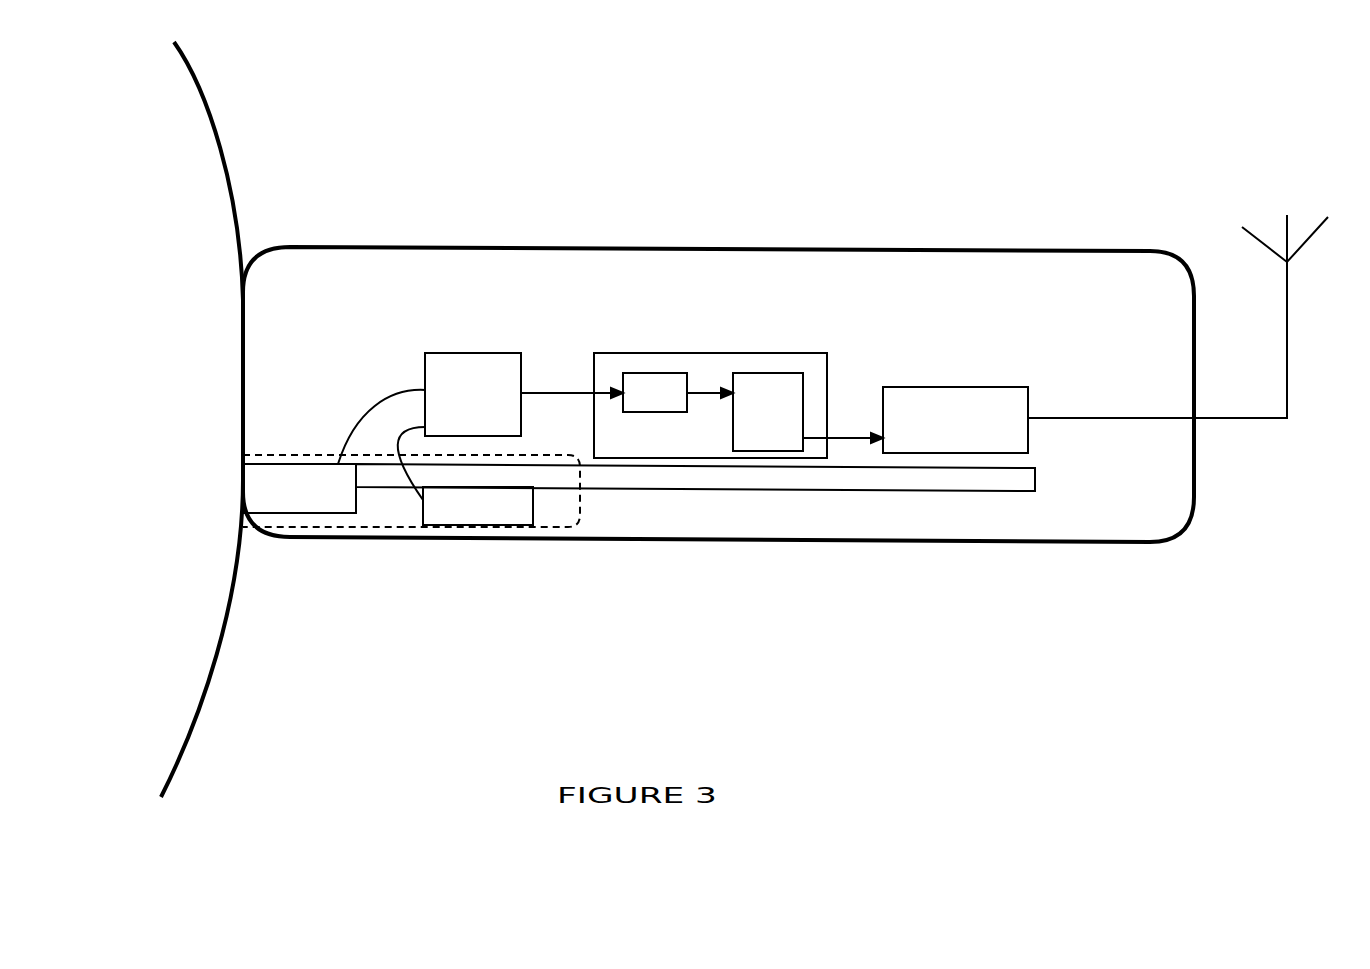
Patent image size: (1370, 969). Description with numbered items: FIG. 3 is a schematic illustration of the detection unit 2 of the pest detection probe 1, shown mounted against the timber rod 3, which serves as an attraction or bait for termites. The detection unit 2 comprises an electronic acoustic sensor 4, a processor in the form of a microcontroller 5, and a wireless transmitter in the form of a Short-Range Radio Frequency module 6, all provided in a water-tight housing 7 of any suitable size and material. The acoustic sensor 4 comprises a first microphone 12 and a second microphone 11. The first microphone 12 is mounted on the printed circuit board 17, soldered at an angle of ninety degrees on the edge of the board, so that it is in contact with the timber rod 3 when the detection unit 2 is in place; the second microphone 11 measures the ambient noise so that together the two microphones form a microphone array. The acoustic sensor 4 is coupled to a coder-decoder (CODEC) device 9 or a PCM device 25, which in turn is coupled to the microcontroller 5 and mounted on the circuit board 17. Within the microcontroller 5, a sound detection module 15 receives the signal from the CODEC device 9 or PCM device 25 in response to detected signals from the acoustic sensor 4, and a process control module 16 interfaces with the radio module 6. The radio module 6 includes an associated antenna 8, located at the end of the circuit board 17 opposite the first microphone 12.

The pest detection probe 1 is at (612, 222).
The detection unit 2 is at (892, 558).
The timber rod 3 is at (191, 419).
The electronic acoustic sensor 4 is at (385, 538).
The microcontroller 5 is at (710, 405).
The Short-Range Radio Frequency module 6 is at (955, 420).
The water-tight housing 7 is at (375, 247).
The antenna 8 is at (1287, 313).
The coder-decoder (CODEC) device 9 is at (429, 426).
The PCM device 25 is at (473, 394).
The second microphone 11 is at (478, 506).
The first microphone 12 is at (299, 488).
The sound detection module 15 is at (655, 392).
The process control module 16 is at (768, 412).
The circuit board 17 is at (960, 480).